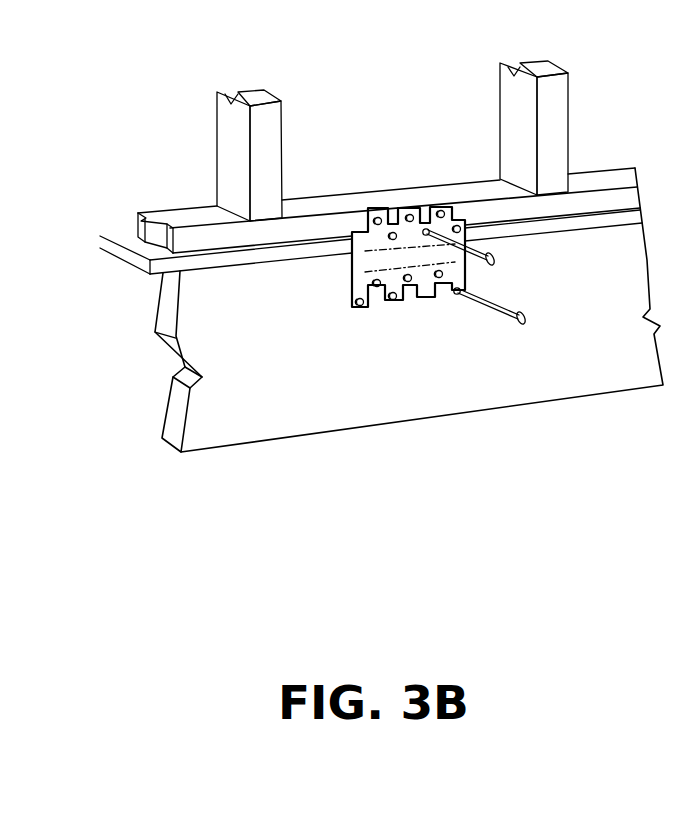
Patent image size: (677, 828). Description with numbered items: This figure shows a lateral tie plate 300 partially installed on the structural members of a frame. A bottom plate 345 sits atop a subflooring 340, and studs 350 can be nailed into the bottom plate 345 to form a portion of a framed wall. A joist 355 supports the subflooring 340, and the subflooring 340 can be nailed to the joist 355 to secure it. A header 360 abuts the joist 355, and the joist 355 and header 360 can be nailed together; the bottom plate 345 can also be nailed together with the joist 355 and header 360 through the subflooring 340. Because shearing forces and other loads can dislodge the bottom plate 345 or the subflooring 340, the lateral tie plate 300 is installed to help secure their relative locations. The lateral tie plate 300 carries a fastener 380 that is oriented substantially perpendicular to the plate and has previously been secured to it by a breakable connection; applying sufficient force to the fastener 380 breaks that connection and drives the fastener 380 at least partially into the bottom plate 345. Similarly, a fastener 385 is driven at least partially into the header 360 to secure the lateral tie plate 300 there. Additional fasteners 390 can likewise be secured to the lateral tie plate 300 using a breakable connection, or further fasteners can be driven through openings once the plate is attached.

The lateral tie plate 300 is at (372, 255).
The subflooring 340 is at (113, 238).
The bottom plate 345 is at (178, 208).
The studs 350 is at (287, 118).
The joist 355 is at (133, 310).
The header 360 is at (262, 387).
The fastener 380 is at (477, 254).
The fastener 385 is at (498, 313).
The fasteners 390 is at (394, 300).